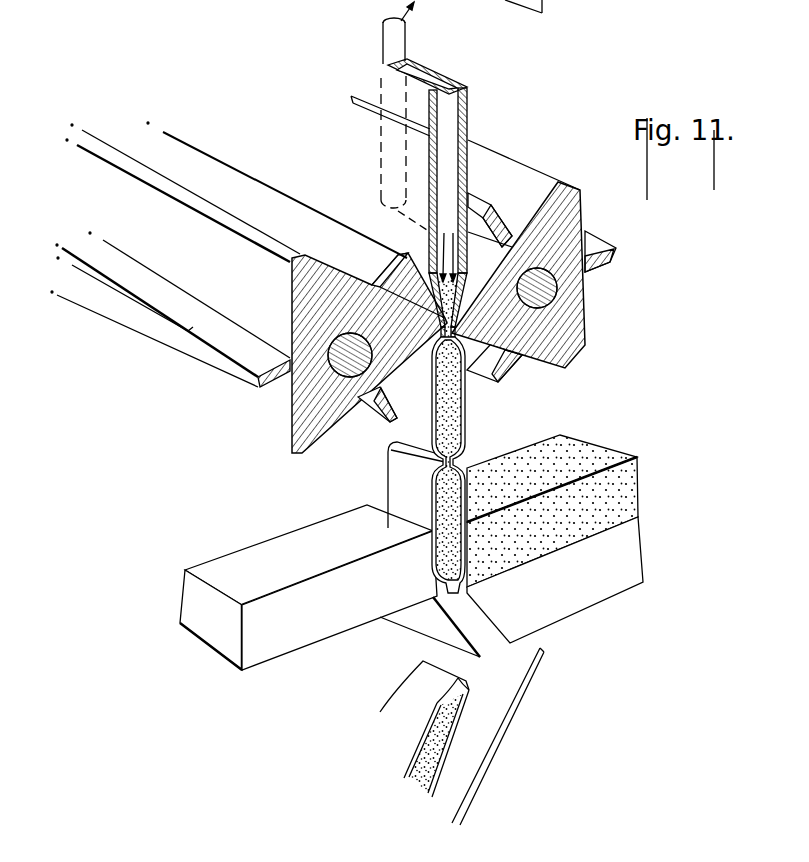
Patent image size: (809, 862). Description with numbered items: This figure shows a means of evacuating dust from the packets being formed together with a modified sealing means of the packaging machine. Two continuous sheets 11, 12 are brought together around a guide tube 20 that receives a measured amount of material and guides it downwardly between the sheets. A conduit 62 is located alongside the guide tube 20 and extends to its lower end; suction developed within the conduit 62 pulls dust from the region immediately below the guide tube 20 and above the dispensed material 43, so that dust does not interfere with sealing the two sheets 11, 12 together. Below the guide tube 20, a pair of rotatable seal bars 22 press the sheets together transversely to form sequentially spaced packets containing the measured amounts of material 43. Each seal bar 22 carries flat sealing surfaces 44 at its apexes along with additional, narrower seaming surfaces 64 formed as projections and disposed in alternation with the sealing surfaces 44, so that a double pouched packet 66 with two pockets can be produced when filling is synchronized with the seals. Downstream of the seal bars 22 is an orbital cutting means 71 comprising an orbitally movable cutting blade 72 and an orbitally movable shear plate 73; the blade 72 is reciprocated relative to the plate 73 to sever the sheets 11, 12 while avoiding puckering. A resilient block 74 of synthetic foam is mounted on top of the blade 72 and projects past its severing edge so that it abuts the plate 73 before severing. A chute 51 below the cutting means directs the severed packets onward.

The continuous sheet 11 is at (342, 175).
The continuous sheet 12 is at (467, 115).
The guide tube 20 is at (433, 67).
The rotatable seal bar 22 is at (600, 211).
The measured amount of material 43 is at (452, 422).
The flat sealing surface 44 is at (240, 225).
The chute 51 is at (505, 733).
The conduit 62 is at (384, 37).
The seaming surface 64 is at (502, 218).
The double pouched packet 66 is at (361, 727).
The orbital cutting means 71 is at (667, 487).
The orbitally movable cutting blade 72 is at (595, 595).
The orbitally movable shear plate 73 is at (272, 647).
The resilient block 74 is at (610, 458).